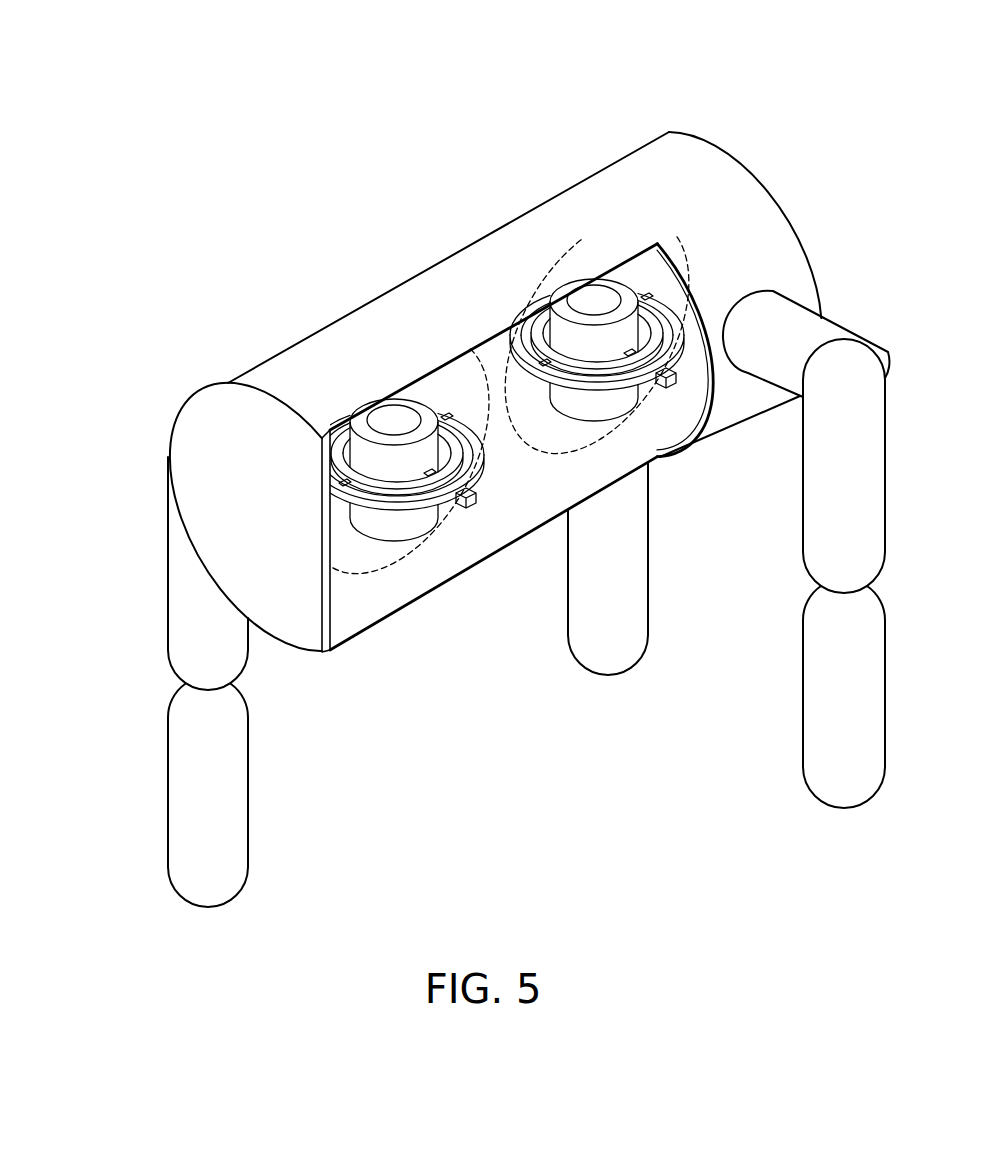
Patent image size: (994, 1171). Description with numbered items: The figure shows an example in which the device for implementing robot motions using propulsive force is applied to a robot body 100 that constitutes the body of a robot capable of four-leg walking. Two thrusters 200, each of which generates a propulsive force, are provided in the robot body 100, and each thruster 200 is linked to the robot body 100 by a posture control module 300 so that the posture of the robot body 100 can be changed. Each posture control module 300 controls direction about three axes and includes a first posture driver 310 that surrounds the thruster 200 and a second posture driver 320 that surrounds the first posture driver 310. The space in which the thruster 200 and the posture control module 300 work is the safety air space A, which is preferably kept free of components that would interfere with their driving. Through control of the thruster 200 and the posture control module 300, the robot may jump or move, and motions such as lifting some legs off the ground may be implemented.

The robot body 100 is at (203, 432).
The thruster 200 is at (363, 420).
The posture control module 300 is at (522, 195).
The first posture driver 310 is at (512, 336).
The second posture driver 320 is at (528, 350).
The safety air space A is at (353, 556).